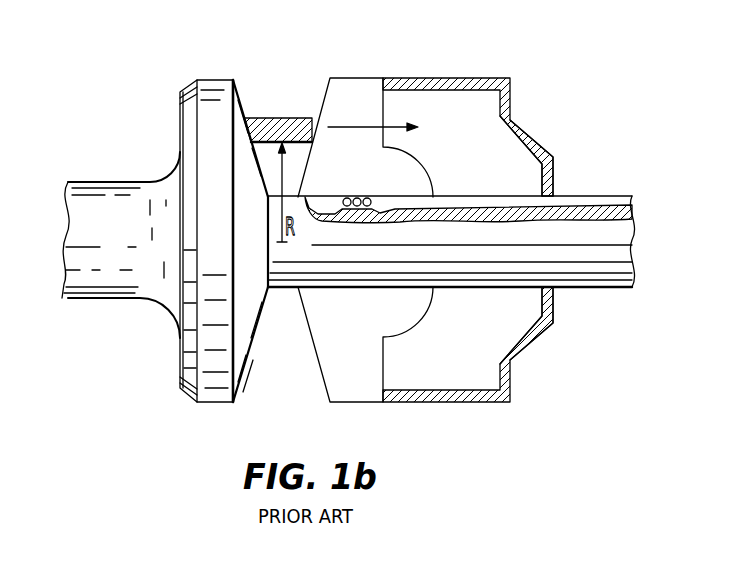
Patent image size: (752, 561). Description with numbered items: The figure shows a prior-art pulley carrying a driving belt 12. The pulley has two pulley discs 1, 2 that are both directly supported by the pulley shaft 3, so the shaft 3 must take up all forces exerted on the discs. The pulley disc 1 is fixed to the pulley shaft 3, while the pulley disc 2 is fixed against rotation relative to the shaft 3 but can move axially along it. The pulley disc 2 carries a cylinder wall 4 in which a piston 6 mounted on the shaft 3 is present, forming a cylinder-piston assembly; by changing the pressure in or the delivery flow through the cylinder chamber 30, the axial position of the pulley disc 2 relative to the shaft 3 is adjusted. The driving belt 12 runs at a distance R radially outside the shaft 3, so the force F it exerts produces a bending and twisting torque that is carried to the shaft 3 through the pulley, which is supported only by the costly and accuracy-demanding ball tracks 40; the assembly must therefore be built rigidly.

The pulley disc 1 is at (206, 80).
The pulley disc 2 is at (341, 79).
The pulley shaft 3 is at (535, 267).
The cylinder wall 4 is at (429, 78).
The piston 6 is at (553, 169).
The driving belt 12 is at (270, 118).
The cylinder chamber 30 is at (467, 143).
The ball tracks 40 is at (368, 208).